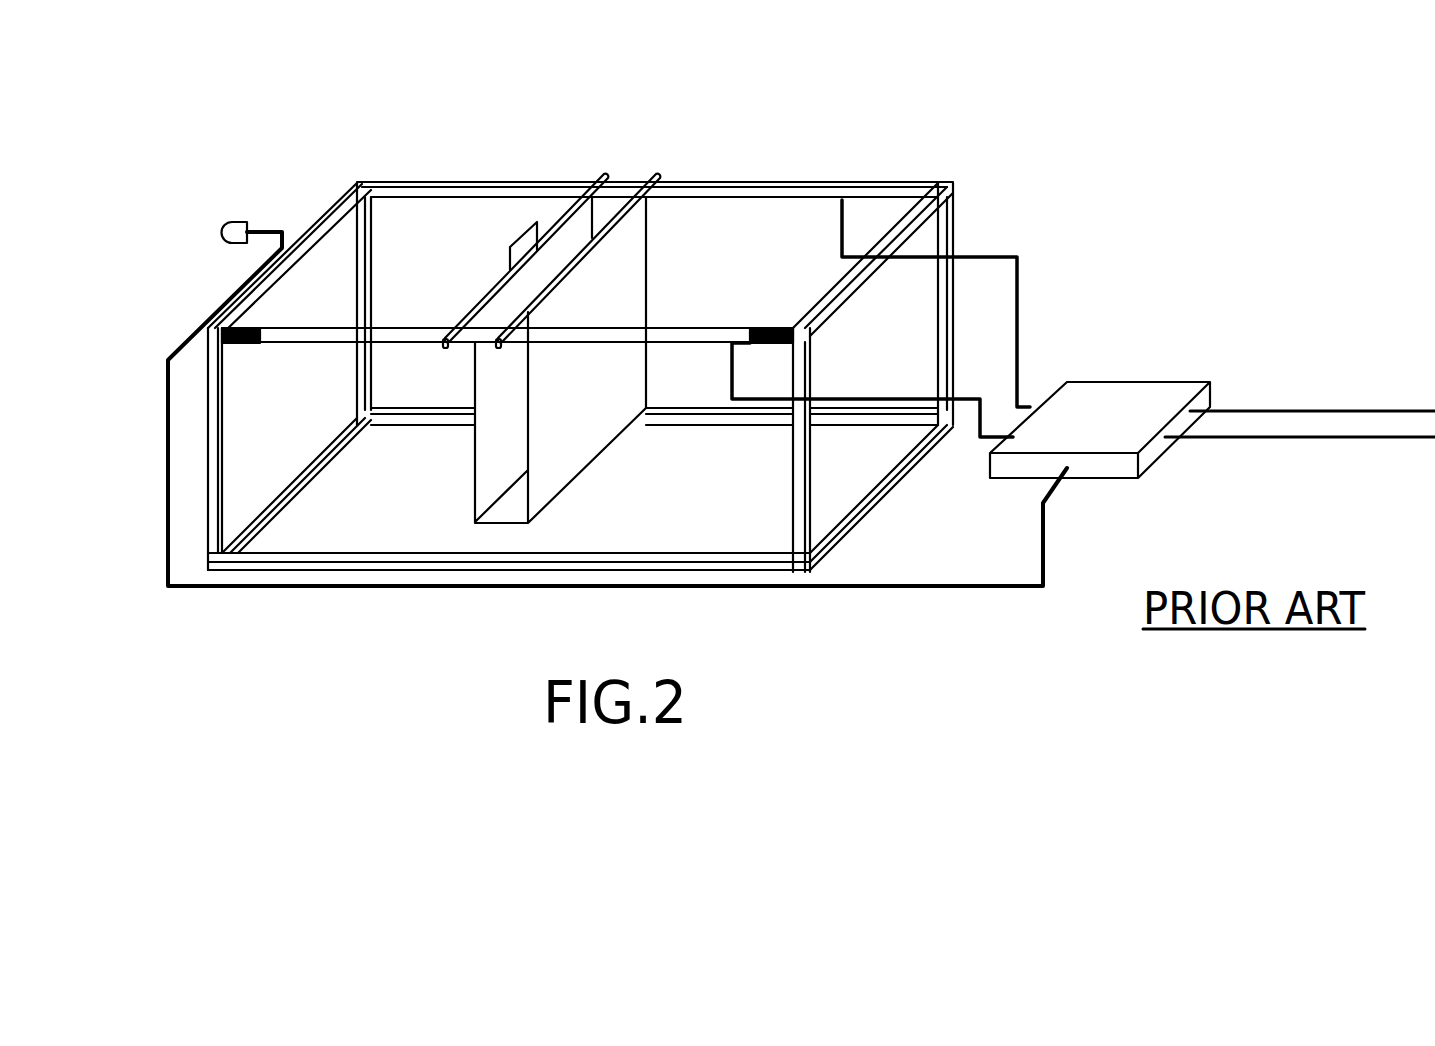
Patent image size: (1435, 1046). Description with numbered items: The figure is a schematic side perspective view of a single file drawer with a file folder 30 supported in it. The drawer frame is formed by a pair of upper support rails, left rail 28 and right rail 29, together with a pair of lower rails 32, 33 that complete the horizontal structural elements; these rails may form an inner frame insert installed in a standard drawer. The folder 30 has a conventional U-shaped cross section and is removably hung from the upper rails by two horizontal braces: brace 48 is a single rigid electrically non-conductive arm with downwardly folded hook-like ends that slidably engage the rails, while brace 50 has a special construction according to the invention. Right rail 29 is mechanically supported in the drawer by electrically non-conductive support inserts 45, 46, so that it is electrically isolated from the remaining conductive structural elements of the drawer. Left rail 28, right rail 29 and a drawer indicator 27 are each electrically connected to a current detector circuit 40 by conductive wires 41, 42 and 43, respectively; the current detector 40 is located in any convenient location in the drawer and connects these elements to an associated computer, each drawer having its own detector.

The drawer indicator 27 is at (225, 233).
The left upper support rail 28 is at (787, 185).
The right upper support rail 29 is at (653, 333).
The file folder 30 is at (557, 253).
The lower rail 32 is at (680, 418).
The lower rail 33 is at (465, 565).
The current detector circuit 40 is at (1123, 413).
The conductive wire 41 is at (990, 255).
The conductive wire 42 is at (873, 400).
The conductive wire 43 is at (895, 583).
The electrically non-conductive support insert 45 is at (257, 325).
The electrically non-conductive support insert 46 is at (758, 330).
The brace 48 is at (637, 192).
The brace 50 is at (478, 300).